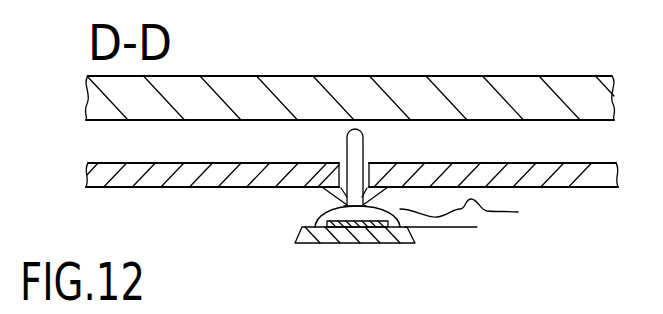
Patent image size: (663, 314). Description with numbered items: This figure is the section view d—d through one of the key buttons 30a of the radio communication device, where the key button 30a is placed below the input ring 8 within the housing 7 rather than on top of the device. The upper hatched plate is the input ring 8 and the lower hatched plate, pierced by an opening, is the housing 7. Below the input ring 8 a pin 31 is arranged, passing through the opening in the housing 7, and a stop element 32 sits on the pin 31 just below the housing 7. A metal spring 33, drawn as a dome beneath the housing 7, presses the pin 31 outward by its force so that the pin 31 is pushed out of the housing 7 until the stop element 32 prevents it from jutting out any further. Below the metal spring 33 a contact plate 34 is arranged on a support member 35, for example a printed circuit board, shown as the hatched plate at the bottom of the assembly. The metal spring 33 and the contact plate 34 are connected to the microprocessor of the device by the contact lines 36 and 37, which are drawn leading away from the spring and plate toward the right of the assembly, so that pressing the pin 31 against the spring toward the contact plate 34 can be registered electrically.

The housing 7 is at (592, 188).
The input ring 8 is at (555, 76).
The key button 30a is at (243, 234).
The pin 31 is at (365, 141).
The stop element 32 is at (334, 191).
The metal spring 33 is at (320, 213).
The contact plate 34 is at (350, 228).
The support member 35 is at (304, 243).
The contact line 36 is at (477, 227).
The contact line 37 is at (473, 212).